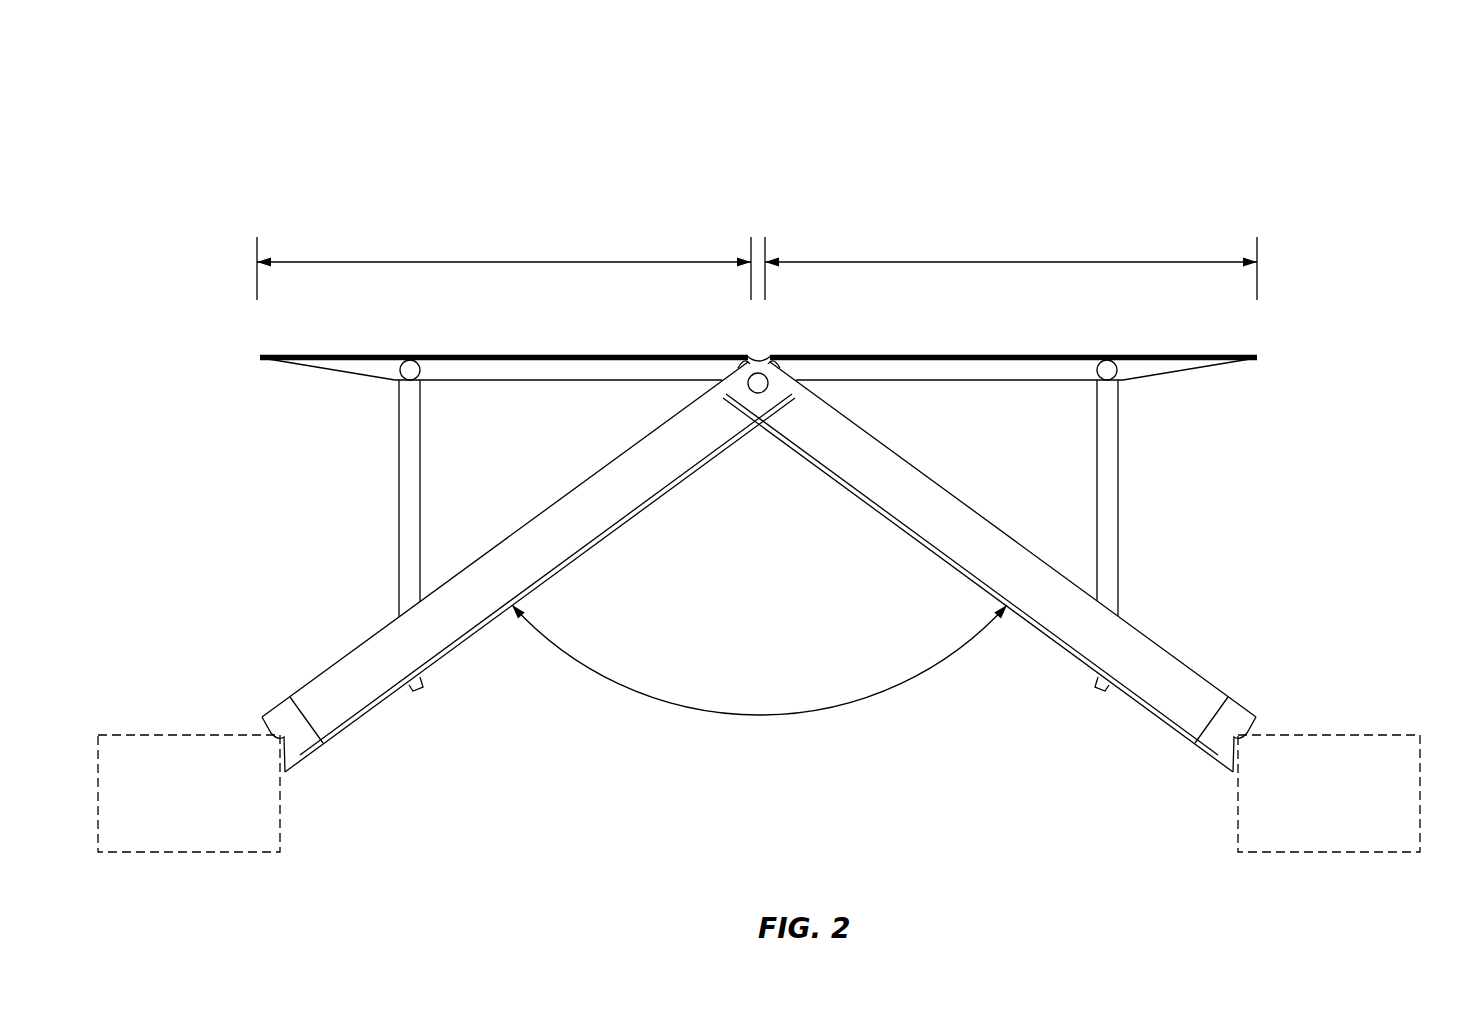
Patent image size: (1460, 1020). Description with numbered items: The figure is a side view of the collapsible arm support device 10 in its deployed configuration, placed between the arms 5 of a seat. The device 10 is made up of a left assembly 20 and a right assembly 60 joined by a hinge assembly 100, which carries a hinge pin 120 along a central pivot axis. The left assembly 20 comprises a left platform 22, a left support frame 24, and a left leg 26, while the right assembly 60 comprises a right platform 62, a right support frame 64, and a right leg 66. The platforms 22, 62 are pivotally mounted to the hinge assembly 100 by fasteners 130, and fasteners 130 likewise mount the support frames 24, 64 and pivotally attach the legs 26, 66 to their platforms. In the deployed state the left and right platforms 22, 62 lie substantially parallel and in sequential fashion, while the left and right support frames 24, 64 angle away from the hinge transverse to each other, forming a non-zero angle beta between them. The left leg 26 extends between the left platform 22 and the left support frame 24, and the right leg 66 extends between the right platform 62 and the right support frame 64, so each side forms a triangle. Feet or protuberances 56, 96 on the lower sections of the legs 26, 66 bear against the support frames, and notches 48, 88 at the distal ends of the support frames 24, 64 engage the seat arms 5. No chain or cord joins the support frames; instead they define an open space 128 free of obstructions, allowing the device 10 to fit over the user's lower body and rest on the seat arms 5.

The collapsible arm support device 10 is at (1224, 112).
The left assembly 20 is at (528, 208).
The right assembly 60 is at (1053, 200).
The left platform 22 is at (531, 353).
The right platform 62 is at (985, 353).
The hinge assembly 100 is at (763, 350).
The fasteners 130 is at (412, 372).
The hinge pin 120 is at (760, 392).
The left leg 26 is at (399, 492).
The right leg 66 is at (1118, 497).
The left support frame 24 is at (550, 540).
The right support frame 64 is at (1140, 660).
The notches 48 is at (268, 728).
The notches 88 is at (1253, 728).
The feet or protuberances 56 is at (418, 684).
The feet or protuberances 96 is at (1100, 684).
The arms of a seat 5 is at (158, 735).
The open space 128 is at (892, 805).